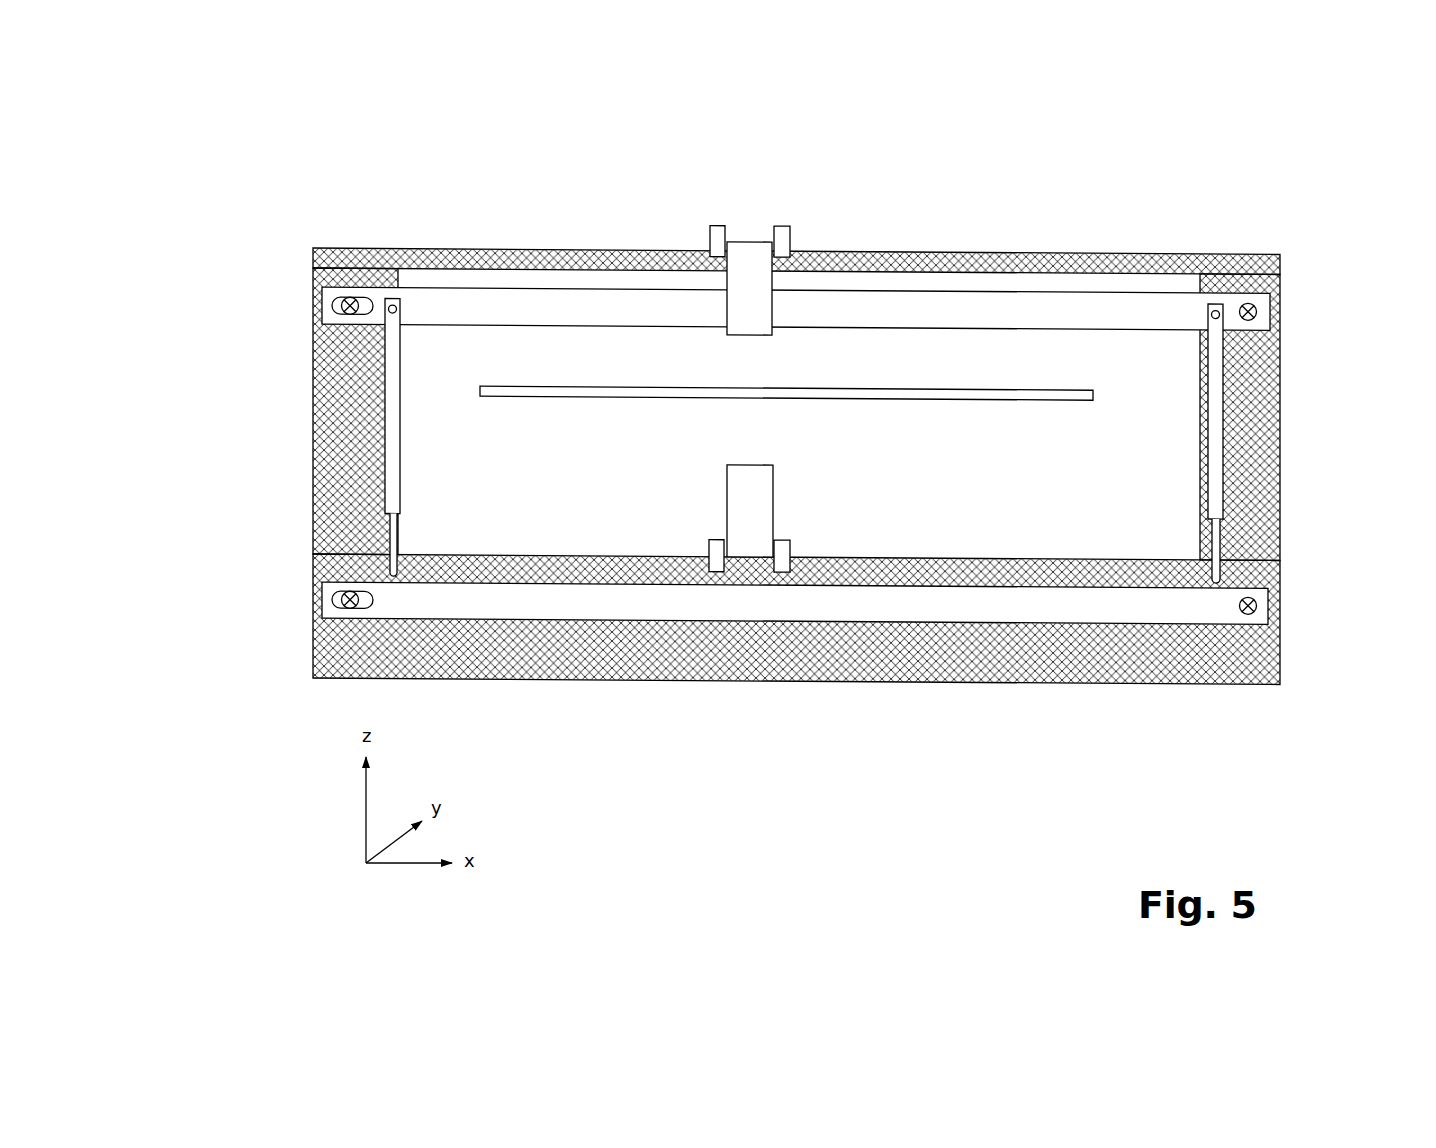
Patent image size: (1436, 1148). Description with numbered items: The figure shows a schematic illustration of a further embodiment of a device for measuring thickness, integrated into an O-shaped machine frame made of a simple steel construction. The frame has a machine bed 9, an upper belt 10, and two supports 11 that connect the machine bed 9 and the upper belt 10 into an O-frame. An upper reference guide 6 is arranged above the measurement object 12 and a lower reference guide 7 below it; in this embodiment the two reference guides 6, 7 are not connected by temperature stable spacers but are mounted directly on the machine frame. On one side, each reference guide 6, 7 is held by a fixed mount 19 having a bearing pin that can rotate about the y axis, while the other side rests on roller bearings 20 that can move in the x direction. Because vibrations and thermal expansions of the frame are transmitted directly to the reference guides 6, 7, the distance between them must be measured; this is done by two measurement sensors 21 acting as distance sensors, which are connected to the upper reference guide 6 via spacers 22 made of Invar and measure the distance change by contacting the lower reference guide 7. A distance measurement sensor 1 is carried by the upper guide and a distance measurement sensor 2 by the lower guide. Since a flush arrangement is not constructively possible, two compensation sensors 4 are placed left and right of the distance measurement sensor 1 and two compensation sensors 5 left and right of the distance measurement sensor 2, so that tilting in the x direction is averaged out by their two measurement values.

The distance measurement sensor 1 is at (753, 257).
The distance measurement sensor 2 is at (748, 530).
The compensation sensors 4 is at (718, 230).
The compensation sensors 5 is at (773, 567).
The reference guide 6 is at (1155, 297).
The reference guide 7 is at (953, 605).
The machine bed 9 is at (1150, 675).
The upper belt 10 is at (995, 265).
The supports 11 is at (340, 465).
The measurement object 12 is at (538, 388).
The fixed mount 19 is at (1262, 300).
The roller bearings 20 is at (330, 302).
The measurement sensors 21 is at (380, 546).
The spacers 22 is at (380, 390).